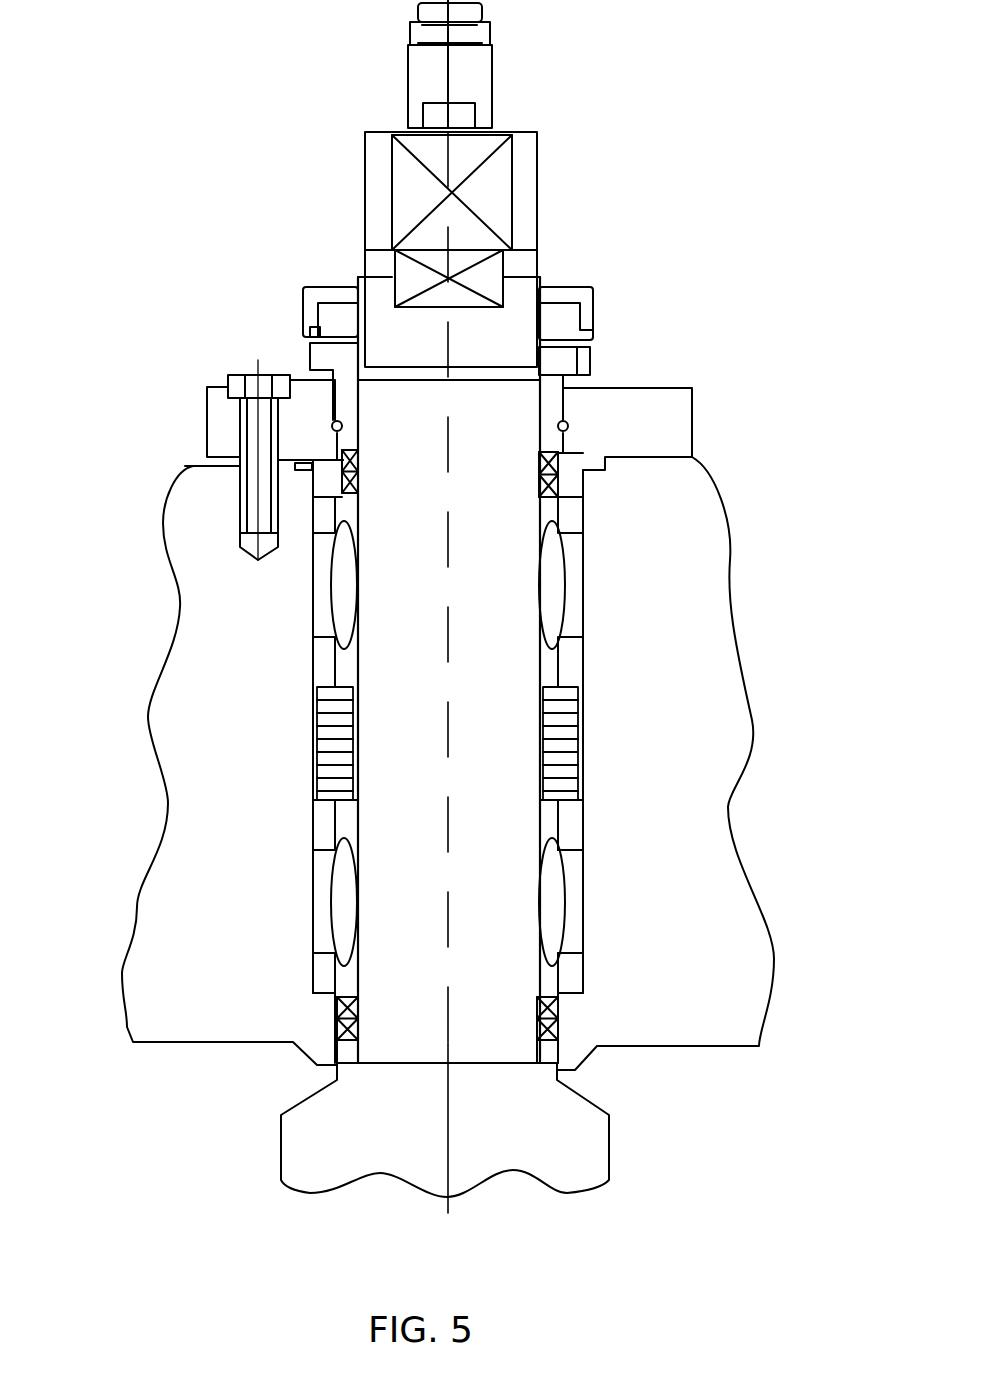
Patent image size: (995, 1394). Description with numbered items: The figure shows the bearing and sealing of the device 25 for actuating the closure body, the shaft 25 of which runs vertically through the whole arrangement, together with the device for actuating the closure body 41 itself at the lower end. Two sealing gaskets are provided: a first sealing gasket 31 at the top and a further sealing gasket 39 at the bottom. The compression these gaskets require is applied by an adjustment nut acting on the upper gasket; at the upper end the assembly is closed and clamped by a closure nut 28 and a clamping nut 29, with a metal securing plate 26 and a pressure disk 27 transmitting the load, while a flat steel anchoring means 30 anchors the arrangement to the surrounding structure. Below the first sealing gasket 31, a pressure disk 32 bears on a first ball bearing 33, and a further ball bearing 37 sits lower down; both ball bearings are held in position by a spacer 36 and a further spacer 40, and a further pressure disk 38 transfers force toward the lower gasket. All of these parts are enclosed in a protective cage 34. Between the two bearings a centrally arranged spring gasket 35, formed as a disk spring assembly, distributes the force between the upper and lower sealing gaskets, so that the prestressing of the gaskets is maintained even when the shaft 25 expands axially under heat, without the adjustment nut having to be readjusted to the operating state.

The device for actuating the closure body 25 is at (390, 662).
The metal securing plate 26 is at (331, 293).
The pressure disk 27 is at (309, 330).
The closure nut 28 is at (558, 322).
The clamping nut 29 is at (558, 360).
The flat steel anchoring means 30 is at (227, 423).
The first sealing gasket 31 is at (193, 467).
The pressure disk 32 is at (567, 513).
The first ball bearing 33 is at (343, 583).
The protective cage 34 is at (661, 680).
The spring gasket 35 is at (317, 740).
The spacer 36 is at (571, 826).
The further ball bearing 37 is at (343, 901).
The further pressure disk 38 is at (567, 977).
The further sealing gasket 39 is at (337, 1027).
The further spacer 40 is at (543, 1052).
The device for actuating the closure body 41 is at (562, 1130).